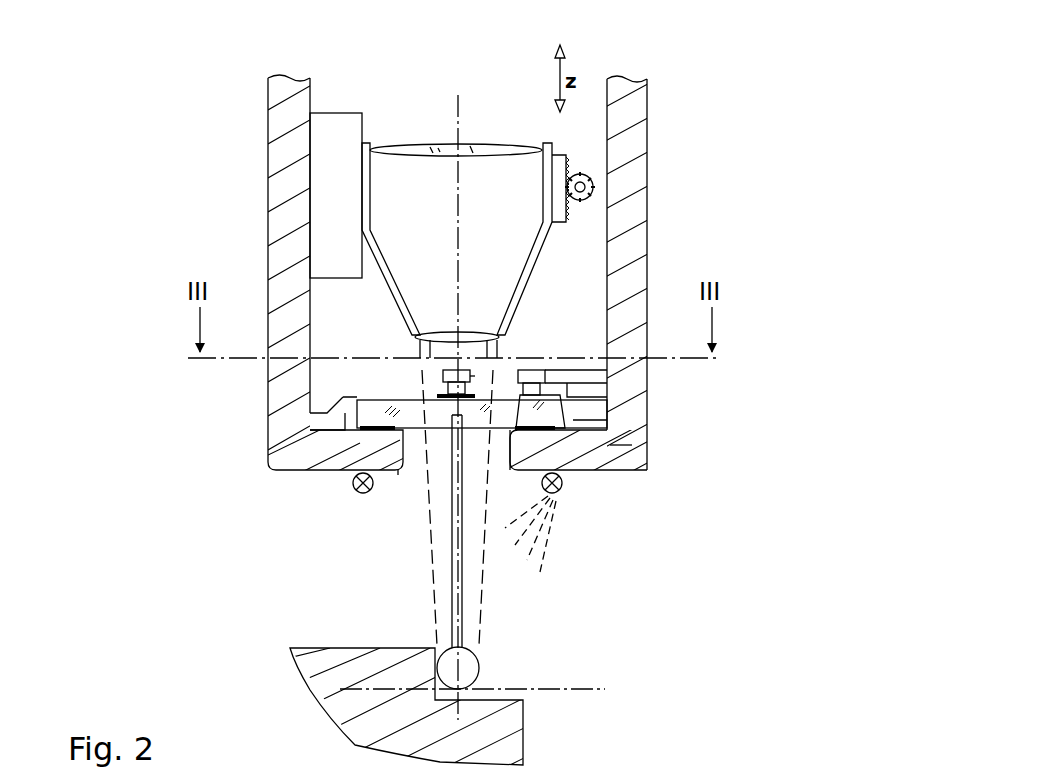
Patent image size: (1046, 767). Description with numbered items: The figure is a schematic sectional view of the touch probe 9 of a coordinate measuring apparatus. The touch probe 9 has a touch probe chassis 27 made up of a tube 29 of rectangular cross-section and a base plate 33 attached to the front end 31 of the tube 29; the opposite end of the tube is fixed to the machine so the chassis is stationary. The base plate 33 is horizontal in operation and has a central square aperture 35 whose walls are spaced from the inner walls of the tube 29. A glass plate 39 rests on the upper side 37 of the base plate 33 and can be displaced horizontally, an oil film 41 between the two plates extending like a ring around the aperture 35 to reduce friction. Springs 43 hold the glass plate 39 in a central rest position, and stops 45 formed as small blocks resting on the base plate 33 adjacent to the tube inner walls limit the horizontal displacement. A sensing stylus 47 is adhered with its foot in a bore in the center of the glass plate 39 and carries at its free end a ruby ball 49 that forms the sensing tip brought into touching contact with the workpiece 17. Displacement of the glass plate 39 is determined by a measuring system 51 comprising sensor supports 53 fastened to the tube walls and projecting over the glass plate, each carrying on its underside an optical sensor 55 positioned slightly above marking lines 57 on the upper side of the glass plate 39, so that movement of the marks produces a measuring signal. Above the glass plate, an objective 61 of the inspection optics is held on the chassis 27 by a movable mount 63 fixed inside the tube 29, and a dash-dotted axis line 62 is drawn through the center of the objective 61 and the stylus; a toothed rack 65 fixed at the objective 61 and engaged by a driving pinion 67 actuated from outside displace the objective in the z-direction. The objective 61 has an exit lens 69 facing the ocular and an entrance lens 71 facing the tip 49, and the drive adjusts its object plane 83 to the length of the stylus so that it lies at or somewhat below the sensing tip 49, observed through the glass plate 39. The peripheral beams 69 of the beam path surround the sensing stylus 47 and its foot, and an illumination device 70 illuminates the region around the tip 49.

The touch probe 9 is at (700, 113).
The workpiece 17 is at (320, 648).
The touch probe chassis 27 is at (652, 175).
The tube 29 is at (268, 142).
The front end 31 is at (615, 445).
The base plate 33 is at (632, 472).
The central square aperture 35 is at (398, 472).
The upper side 37 is at (343, 426).
The glass plate 39 is at (368, 400).
The oil film 41 is at (530, 440).
The springs 43 is at (609, 378).
The stops / bore (foot of sensing stylus) 45 is at (343, 424).
The sensing stylus 47 is at (452, 545).
The ruby ball 49 is at (480, 668).
The measuring system 51 is at (560, 350).
The sensor supports 53 is at (455, 370).
The optical sensor 55 is at (470, 384).
The marking lines 57 is at (538, 400).
The objective 61 is at (512, 132).
The optical axis 62 is at (460, 214).
The movable mount 63 is at (333, 113).
The toothed rack 65 is at (566, 222).
The driving pinion 67 is at (581, 173).
The exit lens / peripheral beams 69 is at (415, 147).
The illumination device 70 is at (353, 483).
The entrance lens 71 is at (430, 345).
The object plane 83 is at (368, 689).